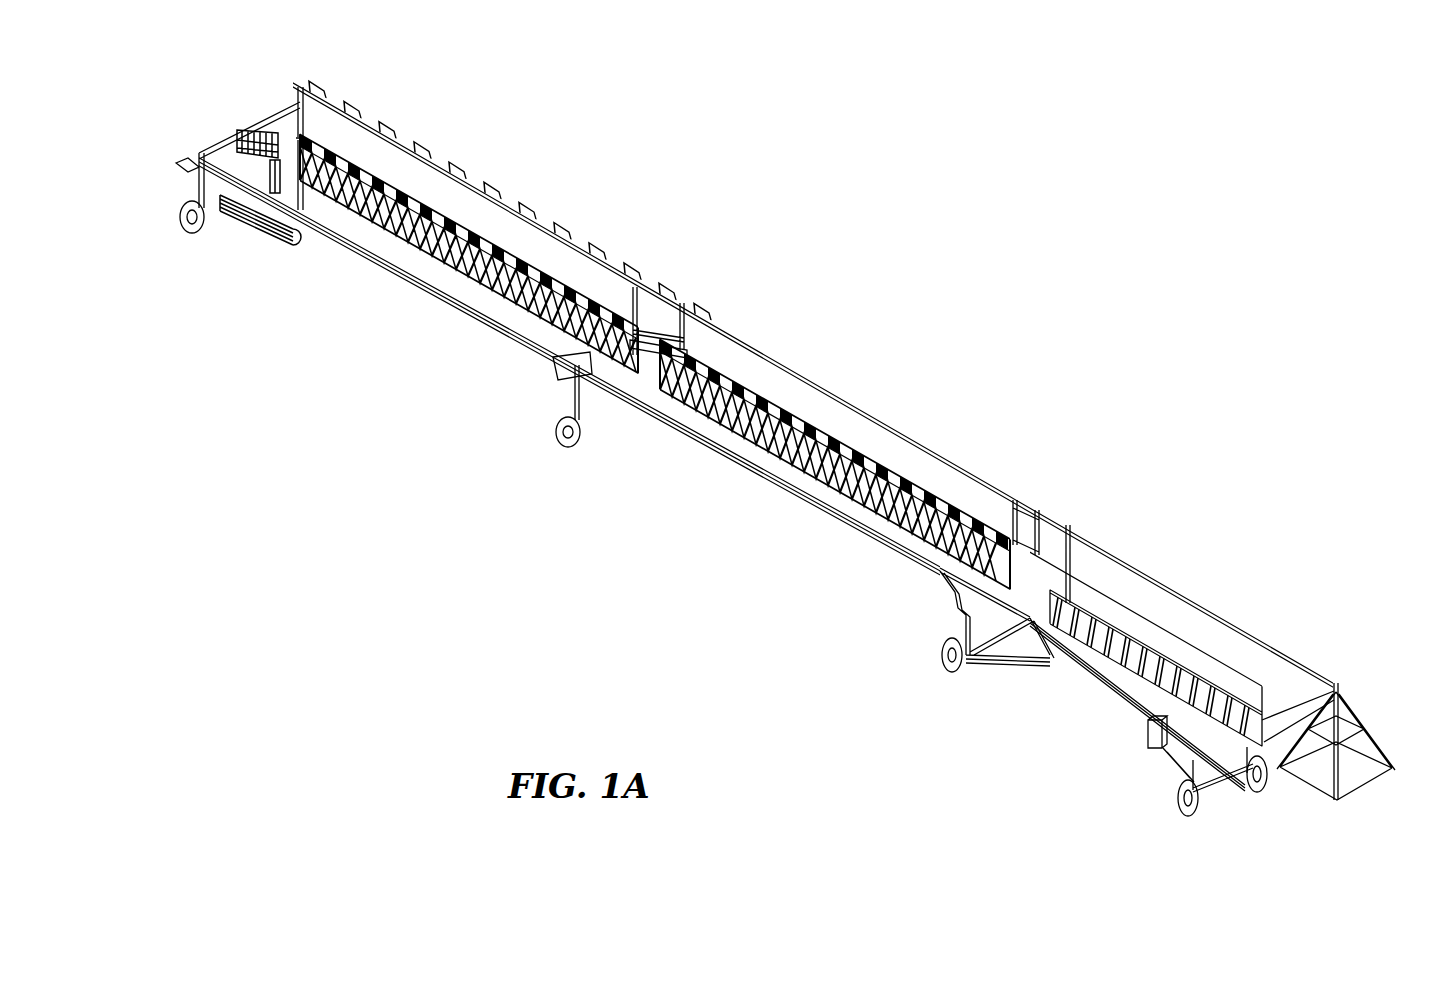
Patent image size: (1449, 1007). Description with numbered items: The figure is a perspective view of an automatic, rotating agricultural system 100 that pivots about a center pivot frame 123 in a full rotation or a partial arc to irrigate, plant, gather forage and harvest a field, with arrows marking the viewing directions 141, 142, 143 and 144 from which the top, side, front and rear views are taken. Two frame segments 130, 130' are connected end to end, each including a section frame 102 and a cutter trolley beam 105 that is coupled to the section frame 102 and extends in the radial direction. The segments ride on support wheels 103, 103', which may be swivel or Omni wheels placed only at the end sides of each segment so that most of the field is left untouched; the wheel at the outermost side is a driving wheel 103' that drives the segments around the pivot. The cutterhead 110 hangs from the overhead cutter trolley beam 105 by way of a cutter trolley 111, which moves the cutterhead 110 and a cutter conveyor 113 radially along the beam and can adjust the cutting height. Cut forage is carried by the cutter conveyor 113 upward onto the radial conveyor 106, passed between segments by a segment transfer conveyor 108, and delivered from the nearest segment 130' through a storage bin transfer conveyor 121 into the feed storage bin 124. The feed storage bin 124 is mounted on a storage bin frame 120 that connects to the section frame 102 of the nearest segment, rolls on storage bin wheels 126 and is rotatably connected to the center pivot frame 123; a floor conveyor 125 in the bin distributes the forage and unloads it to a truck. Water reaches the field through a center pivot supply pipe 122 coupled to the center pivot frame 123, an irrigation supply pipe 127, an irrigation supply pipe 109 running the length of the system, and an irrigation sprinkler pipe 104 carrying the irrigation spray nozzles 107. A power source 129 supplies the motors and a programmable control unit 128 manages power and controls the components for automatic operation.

The automatic, rotating agricultural system 100 is at (1013, 178).
The section frame 102 is at (280, 103).
The support wheel 103 is at (547, 428).
The driving wheel 103' is at (181, 244).
The irrigation sprinkler pipe 104 is at (433, 165).
The cutter trolley beam 105 is at (481, 300).
The radial conveyor 106 is at (483, 235).
The irrigation spray nozzles 107 is at (563, 238).
The segment transfer conveyor 108 is at (686, 334).
The irrigation supply pipe 109 is at (818, 385).
The cutterhead 110 is at (299, 244).
The cutter trolley 111 is at (254, 176).
The cutter conveyor 113 is at (318, 150).
The storage bin frame 120 is at (1077, 667).
The storage bin transfer conveyor 121 is at (1050, 538).
The center pivot supply pipe 122 is at (1341, 690).
The center pivot frame 123 is at (1366, 742).
The feed storage bin 124 is at (1126, 690).
The floor conveyor 125 is at (1243, 780).
The storage bin wheels 126 is at (940, 673).
The irrigation supply pipe 127 is at (1226, 617).
The control unit 128 is at (1150, 741).
The power source 129 is at (1171, 767).
The frame segment 130 is at (295, 411).
The frame segment 130' is at (672, 612).
The viewing direction 141 is at (738, 214).
The viewing direction 142 is at (452, 526).
The viewing direction 143 is at (158, 118).
The viewing direction 144 is at (1371, 801).